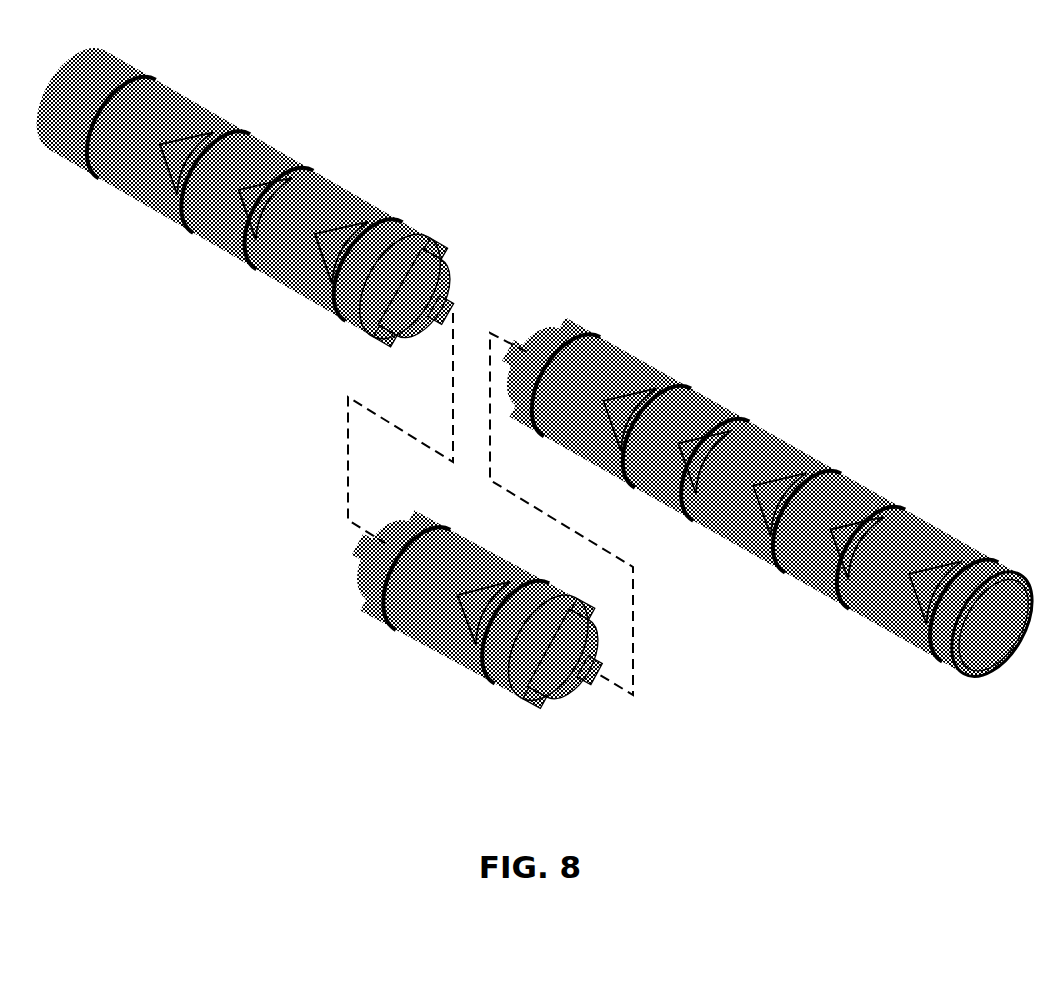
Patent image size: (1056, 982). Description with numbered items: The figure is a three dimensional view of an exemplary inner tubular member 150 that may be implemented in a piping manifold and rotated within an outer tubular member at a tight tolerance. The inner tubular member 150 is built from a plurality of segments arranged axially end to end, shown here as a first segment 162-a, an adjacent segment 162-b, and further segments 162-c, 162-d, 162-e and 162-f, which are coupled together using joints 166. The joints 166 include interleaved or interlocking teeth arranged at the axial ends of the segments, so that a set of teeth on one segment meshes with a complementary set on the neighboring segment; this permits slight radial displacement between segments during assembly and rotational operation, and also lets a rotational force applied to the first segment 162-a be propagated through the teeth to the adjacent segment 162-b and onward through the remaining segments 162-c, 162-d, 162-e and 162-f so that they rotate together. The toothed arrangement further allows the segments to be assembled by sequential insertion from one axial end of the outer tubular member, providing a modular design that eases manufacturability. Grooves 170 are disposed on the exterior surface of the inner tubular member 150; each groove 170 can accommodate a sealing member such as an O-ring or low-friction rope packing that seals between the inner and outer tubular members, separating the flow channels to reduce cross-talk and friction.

The inner tubular member 150 is at (534, 402).
The first segment 162-a is at (213, 133).
The adjacent segment 162-b is at (345, 207).
The segment 162-c is at (444, 657).
The segment 162-d is at (647, 367).
The segment 162-e is at (782, 455).
The segment 162-f is at (932, 545).
The joint 166 is at (446, 293).
The groove 170 is at (96, 175).